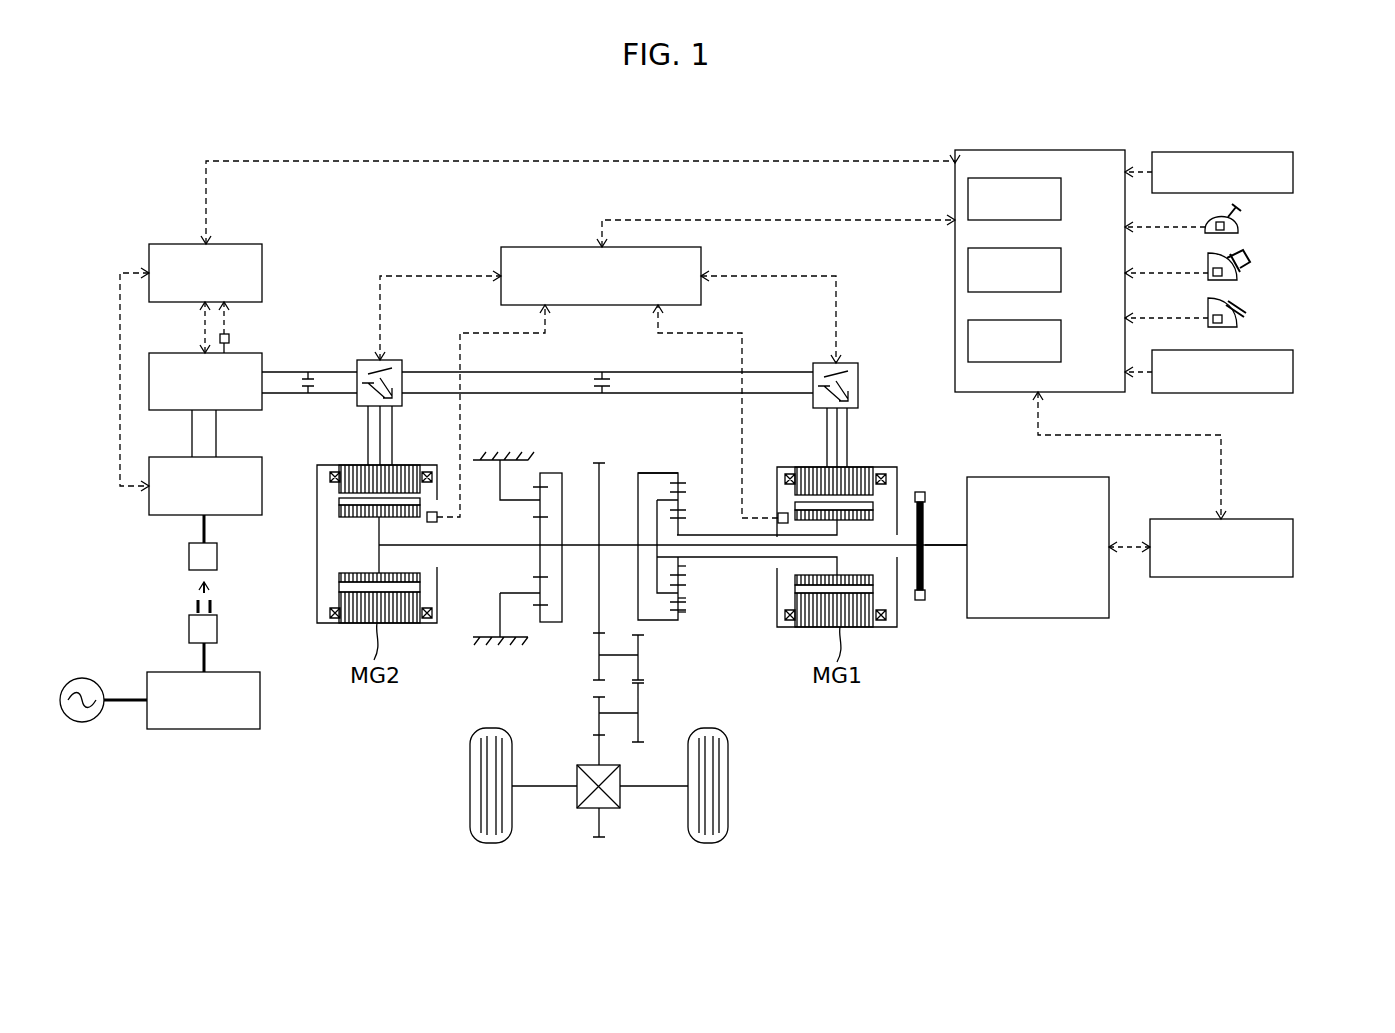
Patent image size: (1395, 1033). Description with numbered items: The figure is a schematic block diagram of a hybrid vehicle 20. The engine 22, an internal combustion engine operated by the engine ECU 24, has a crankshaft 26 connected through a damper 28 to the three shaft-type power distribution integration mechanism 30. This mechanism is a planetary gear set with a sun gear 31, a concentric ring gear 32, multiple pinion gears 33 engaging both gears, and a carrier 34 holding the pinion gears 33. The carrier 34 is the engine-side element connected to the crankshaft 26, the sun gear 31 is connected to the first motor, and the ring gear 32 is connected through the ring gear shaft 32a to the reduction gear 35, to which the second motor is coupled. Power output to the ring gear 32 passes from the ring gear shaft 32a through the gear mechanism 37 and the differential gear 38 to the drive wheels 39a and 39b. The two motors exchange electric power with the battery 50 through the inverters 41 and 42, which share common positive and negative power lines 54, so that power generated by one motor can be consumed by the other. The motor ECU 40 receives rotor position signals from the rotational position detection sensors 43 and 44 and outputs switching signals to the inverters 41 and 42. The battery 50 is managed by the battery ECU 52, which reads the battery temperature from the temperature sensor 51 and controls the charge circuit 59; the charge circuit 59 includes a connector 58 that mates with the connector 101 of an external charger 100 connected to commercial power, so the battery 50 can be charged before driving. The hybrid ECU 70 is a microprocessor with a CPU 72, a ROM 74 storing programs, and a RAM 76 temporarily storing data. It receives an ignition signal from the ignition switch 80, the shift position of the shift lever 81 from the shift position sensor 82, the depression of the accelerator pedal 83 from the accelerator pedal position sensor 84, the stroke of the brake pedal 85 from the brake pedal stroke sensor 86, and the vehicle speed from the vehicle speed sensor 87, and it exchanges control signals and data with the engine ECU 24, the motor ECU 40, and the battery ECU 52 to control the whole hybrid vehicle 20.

The hybrid vehicle 20 is at (944, 738).
The engine 22 is at (1040, 618).
The engine electronic control unit 24 is at (1293, 550).
The crankshaft 26 is at (948, 545).
The damper 28 is at (920, 600).
The power distribution integration mechanism 30 is at (689, 476).
The sun gear 31 is at (678, 568).
The ring gear 32 is at (678, 612).
The ring gear shaft 32a is at (578, 545).
The pinion gears 33 is at (678, 598).
The carrier 34 is at (652, 473).
The reduction gear 35 is at (545, 473).
The gear mechanism 37 is at (646, 665).
The differential gear 38 is at (577, 770).
The drive wheel 39a is at (470, 786).
The drive wheel 39b is at (728, 786).
The motor electronic control unit 40 is at (520, 247).
The inverter 41 is at (815, 363).
The inverter 42 is at (400, 360).
The rotational position detection sensor 43 is at (781, 513).
The rotational position detection sensor 44 is at (432, 512).
The battery 50 is at (240, 410).
The temperature sensor 51 is at (229, 338).
The battery electronic control unit 52 is at (245, 244).
The power lines 54 is at (565, 395).
The connector 58 is at (189, 555).
The charge circuit 59 is at (240, 515).
The hybrid electronic control unit 70 is at (1040, 245).
The CPU 72 is at (1061, 199).
The ROM 74 is at (1061, 269).
The RAM 76 is at (1061, 341).
The ignition switch 80 is at (1293, 172).
The shift lever 81 is at (1241, 209).
The shift position sensor 82 is at (1238, 228).
The accelerator pedal 83 is at (1252, 262).
The accelerator pedal position sensor 84 is at (1237, 277).
The brake pedal 85 is at (1246, 312).
The brake pedal stroke sensor 86 is at (1237, 324).
The vehicle speed sensor 87 is at (1293, 374).
The charger 100 is at (200, 729).
The connector 101 is at (217, 628).